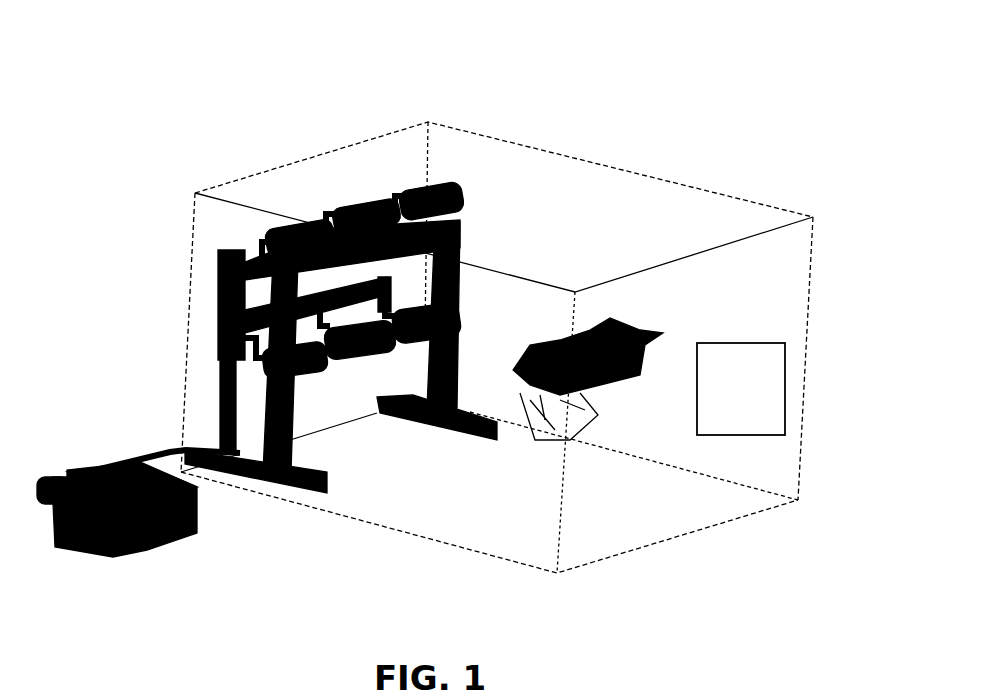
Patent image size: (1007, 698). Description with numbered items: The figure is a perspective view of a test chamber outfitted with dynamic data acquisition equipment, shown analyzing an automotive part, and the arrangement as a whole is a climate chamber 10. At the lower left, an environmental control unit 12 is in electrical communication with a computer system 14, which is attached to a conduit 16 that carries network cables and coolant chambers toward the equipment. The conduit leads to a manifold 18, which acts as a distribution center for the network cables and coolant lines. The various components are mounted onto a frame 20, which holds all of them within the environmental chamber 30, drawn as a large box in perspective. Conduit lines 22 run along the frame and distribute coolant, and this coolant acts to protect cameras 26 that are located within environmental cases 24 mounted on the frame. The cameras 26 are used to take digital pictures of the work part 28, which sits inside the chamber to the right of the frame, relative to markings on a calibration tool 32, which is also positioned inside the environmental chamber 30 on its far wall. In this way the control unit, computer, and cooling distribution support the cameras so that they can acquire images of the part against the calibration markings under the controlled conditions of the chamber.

The climate chamber 10 is at (300, 78).
The environmental control unit 12 is at (180, 538).
The computer system 14 is at (97, 477).
The conduit 16 is at (153, 457).
The manifold 18 is at (221, 313).
The frame 20 is at (323, 487).
The conduit lines 22 is at (268, 232).
The environmental cases 24 is at (427, 180).
The cameras 26 is at (455, 207).
The work part 28 is at (640, 322).
The environmental chamber 30 is at (668, 215).
The calibration tool 32 is at (763, 392).